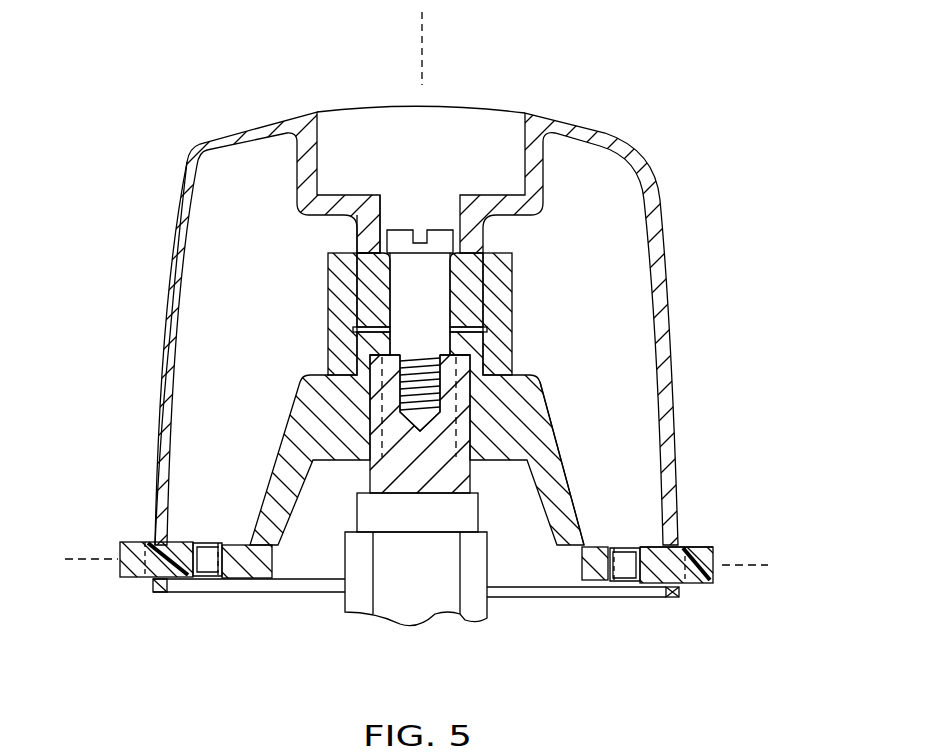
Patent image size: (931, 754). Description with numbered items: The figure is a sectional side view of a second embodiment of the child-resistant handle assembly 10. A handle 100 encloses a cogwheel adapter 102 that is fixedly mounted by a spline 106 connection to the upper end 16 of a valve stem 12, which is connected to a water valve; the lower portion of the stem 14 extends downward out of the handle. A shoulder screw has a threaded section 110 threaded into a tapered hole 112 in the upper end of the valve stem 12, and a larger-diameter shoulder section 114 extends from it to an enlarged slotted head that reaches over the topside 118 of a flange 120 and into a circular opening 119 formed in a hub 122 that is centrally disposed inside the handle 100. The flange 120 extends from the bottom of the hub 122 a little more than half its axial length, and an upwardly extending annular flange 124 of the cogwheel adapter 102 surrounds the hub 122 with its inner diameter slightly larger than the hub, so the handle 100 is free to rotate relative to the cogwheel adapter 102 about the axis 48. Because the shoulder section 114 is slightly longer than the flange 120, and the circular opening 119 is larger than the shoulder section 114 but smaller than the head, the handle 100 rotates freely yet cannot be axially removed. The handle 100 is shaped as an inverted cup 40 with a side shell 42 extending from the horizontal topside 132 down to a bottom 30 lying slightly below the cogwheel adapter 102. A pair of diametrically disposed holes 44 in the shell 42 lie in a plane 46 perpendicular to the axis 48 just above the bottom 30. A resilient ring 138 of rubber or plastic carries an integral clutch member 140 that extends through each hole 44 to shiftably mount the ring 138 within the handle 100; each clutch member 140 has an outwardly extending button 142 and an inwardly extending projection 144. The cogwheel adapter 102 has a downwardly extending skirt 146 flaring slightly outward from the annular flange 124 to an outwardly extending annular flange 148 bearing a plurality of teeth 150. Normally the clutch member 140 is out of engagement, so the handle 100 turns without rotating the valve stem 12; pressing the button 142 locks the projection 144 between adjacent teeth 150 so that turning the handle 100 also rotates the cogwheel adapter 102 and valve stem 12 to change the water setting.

The child-resistant handle assembly 10 is at (672, 130).
The valve stem 12 is at (339, 605).
The stem 14 is at (427, 588).
The upper end of valve stem 16 is at (467, 473).
The bottom 30 is at (187, 592).
The inverted cup 40 is at (163, 333).
The side shell 42 is at (155, 427).
The holes 44 is at (688, 545).
The plane 46 is at (93, 557).
The axis 48 is at (425, 42).
The handle 100 is at (680, 266).
The cogwheel adapter 102 is at (556, 410).
The spline 106 is at (463, 393).
The threaded section 110 is at (400, 387).
The tapered hole 112 is at (405, 350).
The shoulder section 114 is at (432, 272).
The topside of flange 118 is at (340, 263).
The circular opening 119 is at (447, 292).
The flange 120 is at (372, 297).
The hub 122 is at (352, 216).
The annular flange 124 is at (350, 325).
The topside 132 is at (586, 124).
The resilient ring 138 is at (215, 588).
The clutch member 140 is at (708, 587).
The button 142 is at (713, 550).
The projection 144 is at (178, 543).
The skirt 146 is at (548, 458).
The annular flange 148 is at (245, 562).
The teeth 150 is at (628, 572).